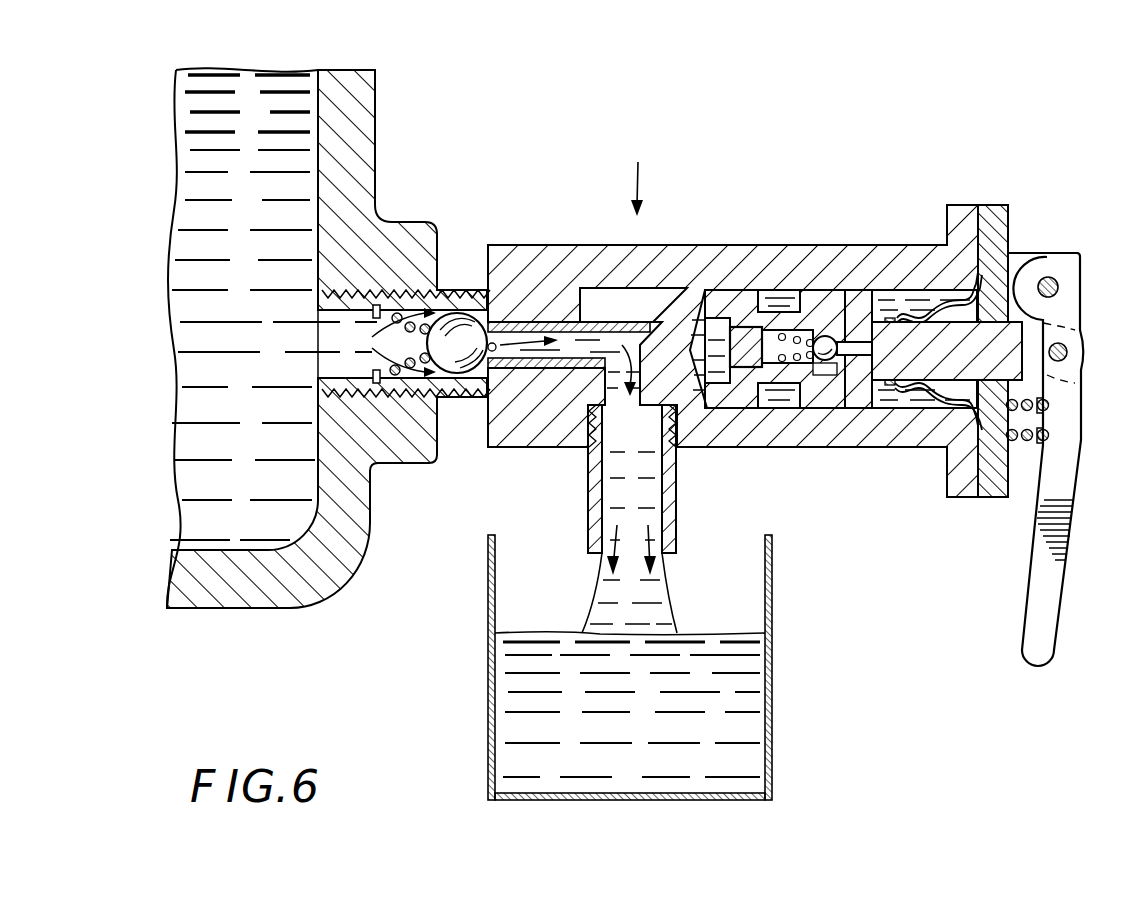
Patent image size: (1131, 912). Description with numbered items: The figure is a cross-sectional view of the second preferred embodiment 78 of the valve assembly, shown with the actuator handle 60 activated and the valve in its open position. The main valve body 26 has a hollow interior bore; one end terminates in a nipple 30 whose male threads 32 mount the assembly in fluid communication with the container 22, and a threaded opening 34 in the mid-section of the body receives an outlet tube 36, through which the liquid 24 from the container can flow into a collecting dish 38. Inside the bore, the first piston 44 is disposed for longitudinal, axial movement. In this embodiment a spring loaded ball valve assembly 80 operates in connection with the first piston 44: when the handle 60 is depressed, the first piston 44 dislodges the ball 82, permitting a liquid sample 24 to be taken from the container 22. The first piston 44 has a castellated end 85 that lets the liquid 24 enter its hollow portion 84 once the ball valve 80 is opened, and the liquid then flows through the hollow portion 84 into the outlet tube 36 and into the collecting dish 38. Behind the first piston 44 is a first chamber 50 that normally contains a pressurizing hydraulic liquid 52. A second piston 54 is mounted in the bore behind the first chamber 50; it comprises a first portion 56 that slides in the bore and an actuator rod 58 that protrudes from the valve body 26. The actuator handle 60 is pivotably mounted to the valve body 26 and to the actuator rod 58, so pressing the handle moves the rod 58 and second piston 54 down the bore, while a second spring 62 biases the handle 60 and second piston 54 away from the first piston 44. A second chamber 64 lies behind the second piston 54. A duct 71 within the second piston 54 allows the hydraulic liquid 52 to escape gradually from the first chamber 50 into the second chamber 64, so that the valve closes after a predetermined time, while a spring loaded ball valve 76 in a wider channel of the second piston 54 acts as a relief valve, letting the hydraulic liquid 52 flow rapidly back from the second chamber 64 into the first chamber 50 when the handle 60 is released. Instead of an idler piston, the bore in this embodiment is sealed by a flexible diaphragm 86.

The container 22 is at (232, 600).
The liquid 24 is at (176, 470).
The main valve body 26 is at (851, 440).
The nipple 30 is at (425, 400).
The male threads 32 is at (456, 292).
The threaded opening 34 is at (681, 418).
The outlet tube 36 is at (672, 512).
The collecting dish 38 is at (637, 800).
The first piston 44 is at (663, 370).
The first space or chamber 50 is at (777, 408).
The hydraulic liquid 52 is at (775, 300).
The second piston 54 is at (848, 297).
The first portion 56 is at (803, 408).
The actuator rod 58 is at (1000, 345).
The actuator handle 60 is at (1048, 644).
The second spring 62 is at (1048, 407).
The second space or chamber 64 is at (885, 398).
The fluid passage or duct 71 is at (825, 408).
The spring loaded ball valve 76 is at (818, 338).
The second preferred embodiment of the valve assembly 78 is at (637, 175).
The spring loaded ball valve assembly 80 is at (450, 378).
The ball 82 is at (458, 373).
The hollow portion 84 is at (527, 327).
The castellated end 85 is at (496, 348).
The flexible diaphragm 86 is at (968, 396).